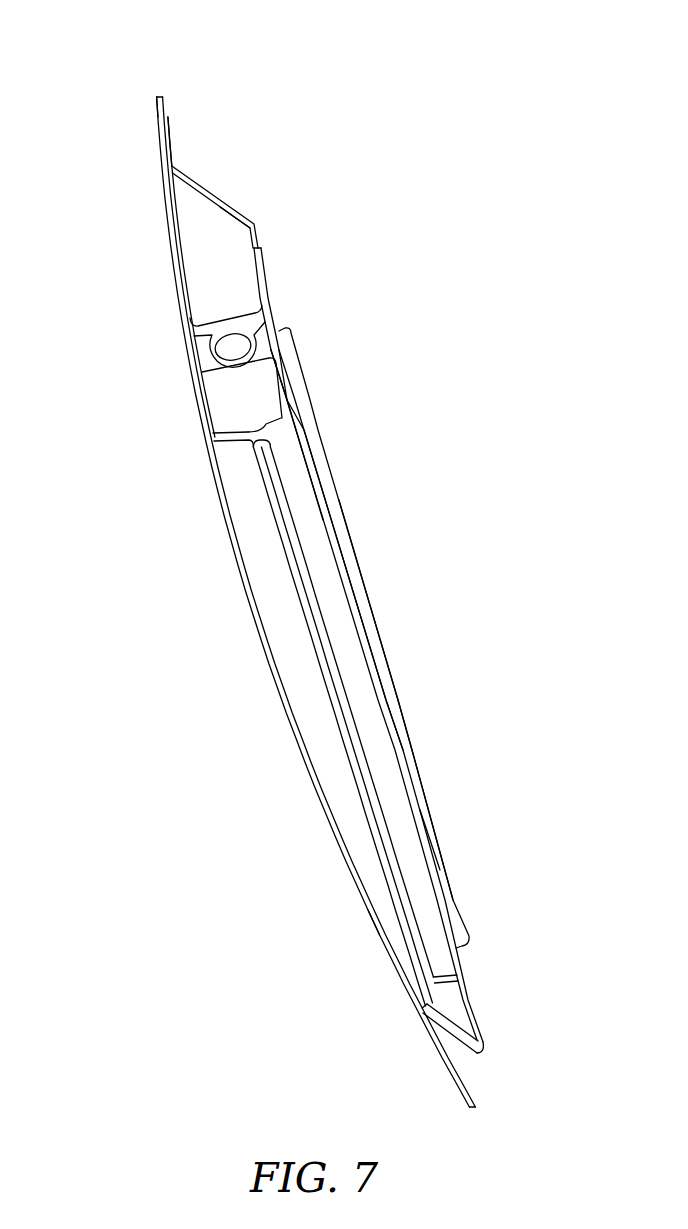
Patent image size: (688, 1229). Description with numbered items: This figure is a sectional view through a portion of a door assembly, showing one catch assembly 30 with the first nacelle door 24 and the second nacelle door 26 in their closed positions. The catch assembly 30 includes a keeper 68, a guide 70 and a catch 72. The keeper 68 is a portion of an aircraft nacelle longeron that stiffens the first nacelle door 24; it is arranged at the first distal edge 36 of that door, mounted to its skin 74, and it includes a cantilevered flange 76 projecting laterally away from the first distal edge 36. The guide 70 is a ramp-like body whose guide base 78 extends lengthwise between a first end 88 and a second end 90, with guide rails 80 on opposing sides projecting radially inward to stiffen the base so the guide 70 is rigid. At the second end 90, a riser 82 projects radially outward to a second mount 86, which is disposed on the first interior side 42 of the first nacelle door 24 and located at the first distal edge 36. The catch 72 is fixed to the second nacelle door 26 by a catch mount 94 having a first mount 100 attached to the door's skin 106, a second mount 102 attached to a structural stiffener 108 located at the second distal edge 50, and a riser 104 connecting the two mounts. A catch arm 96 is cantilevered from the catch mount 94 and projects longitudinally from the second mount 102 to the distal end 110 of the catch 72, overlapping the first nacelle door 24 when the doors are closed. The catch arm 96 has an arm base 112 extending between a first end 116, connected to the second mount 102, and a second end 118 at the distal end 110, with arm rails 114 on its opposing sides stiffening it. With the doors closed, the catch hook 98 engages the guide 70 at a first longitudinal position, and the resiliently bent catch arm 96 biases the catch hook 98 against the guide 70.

The first nacelle door 24 is at (352, 918).
The second nacelle door 26 is at (150, 220).
The catch assembly 30 is at (336, 355).
The first distal edge 36 is at (183, 340).
The first interior side 42 is at (483, 1082).
The second distal edge 50 is at (188, 366).
The keeper 68 is at (272, 388).
The guide 70 is at (331, 731).
The catch 72 is at (418, 751).
The skin 74 is at (251, 575).
The cantilevered flange 76 is at (250, 452).
The guide base 78 is at (368, 830).
The guide rail 80 is at (425, 832).
The riser 82 is at (241, 443).
The second mount 86 is at (240, 437).
The first end 88 is at (418, 1017).
The second end 90 is at (264, 428).
The catch mount 94 is at (250, 218).
The catch arm 96 is at (399, 681).
The catch hook 98 is at (437, 1056).
The first mount 100 is at (172, 132).
The second mount 102 is at (270, 282).
The riser 104 is at (214, 196).
The skin 106 is at (156, 98).
The structural stiffener 108 is at (238, 282).
The distal end 110 is at (487, 1058).
The arm base 112 is at (352, 612).
The arm rail 114 is at (357, 557).
The first end 116 is at (281, 320).
The second end 118 is at (452, 1022).